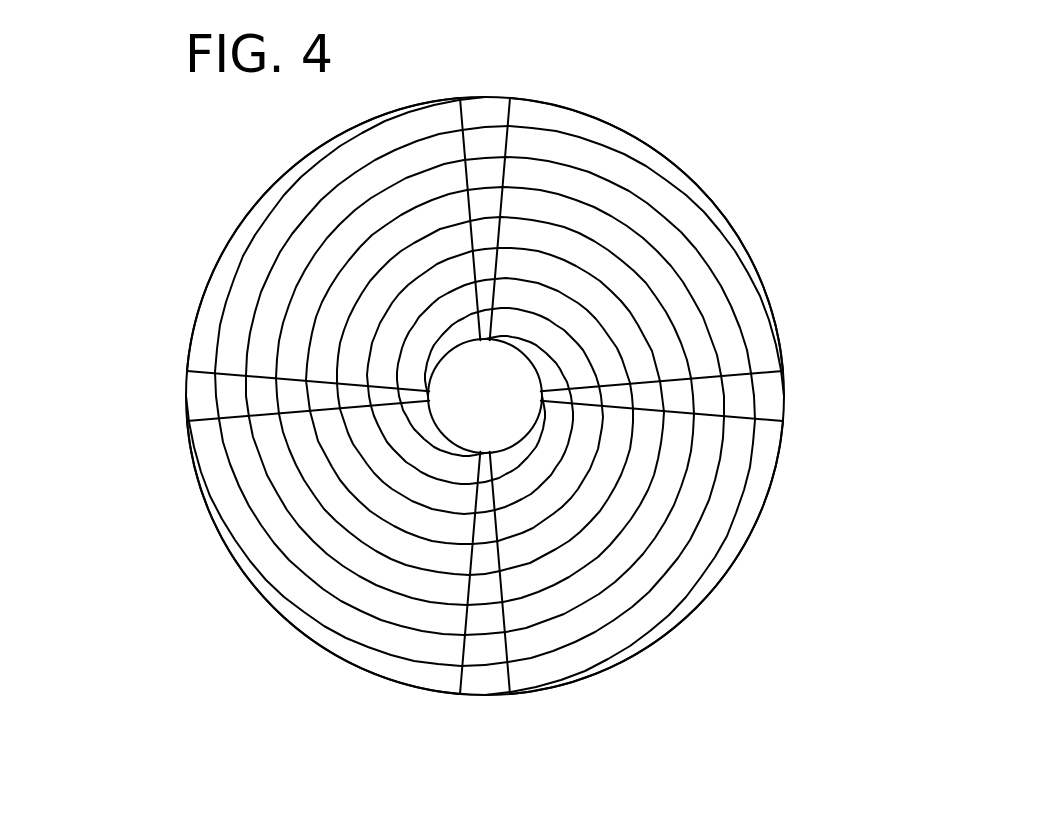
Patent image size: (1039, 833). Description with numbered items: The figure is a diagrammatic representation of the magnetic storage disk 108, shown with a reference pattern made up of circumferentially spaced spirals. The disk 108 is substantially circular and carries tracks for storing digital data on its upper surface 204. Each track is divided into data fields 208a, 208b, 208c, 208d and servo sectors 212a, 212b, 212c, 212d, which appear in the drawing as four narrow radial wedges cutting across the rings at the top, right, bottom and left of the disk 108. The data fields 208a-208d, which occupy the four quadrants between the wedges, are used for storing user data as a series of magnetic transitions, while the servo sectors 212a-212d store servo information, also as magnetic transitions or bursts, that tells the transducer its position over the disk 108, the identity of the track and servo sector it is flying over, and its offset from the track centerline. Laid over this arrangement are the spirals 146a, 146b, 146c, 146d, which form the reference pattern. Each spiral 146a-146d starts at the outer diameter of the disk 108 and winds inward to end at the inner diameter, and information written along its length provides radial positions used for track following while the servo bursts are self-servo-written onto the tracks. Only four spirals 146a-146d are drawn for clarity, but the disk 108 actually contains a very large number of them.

The disk 108 is at (642, 148).
The upper surface 204 is at (577, 118).
The data field 208a is at (690, 187).
The data field 208b is at (760, 488).
The data field 208c is at (380, 668).
The data field 208d is at (215, 292).
The spiral 146a is at (723, 228).
The spiral 146b is at (697, 585).
The spiral 146c is at (283, 602).
The spiral 146d is at (272, 208).
The servo sector 212a is at (486, 110).
The servo sector 212b is at (775, 393).
The servo sector 212c is at (483, 682).
The servo sector 212d is at (195, 399).